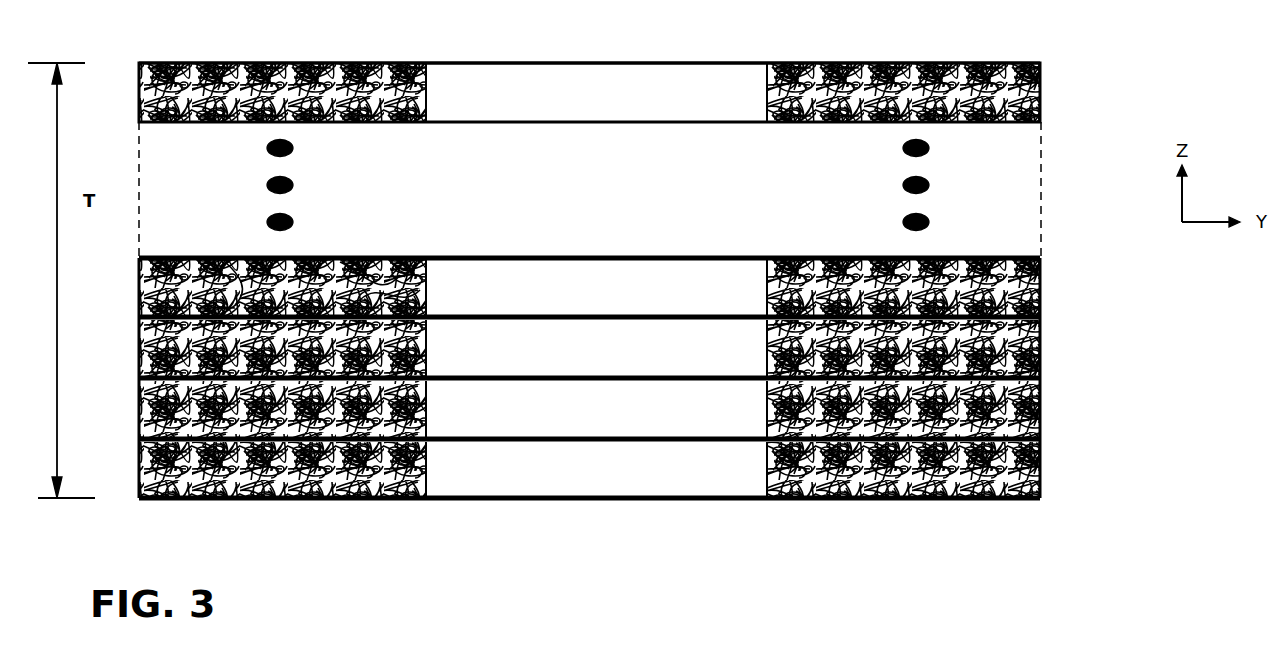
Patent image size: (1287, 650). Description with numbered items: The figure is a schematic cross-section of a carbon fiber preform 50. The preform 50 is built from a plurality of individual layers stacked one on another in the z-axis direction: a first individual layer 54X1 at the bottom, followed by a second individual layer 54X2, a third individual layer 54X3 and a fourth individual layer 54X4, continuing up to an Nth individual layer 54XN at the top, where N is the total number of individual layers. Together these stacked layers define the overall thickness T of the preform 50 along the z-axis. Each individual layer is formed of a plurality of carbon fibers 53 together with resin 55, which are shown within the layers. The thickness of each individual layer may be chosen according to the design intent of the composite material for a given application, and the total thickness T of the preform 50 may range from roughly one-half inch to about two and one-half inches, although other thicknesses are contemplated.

The preform 50 is at (1180, 54).
The carbon fibers 53 is at (422, 256).
The resin 55 is at (232, 257).
The individual layer 54XN is at (1042, 108).
The individual layer 54X4 is at (1042, 302).
The individual layer 54X3 is at (1042, 368).
The individual layer 54X2 is at (1042, 428).
The individual layer 54X1 is at (1042, 488).